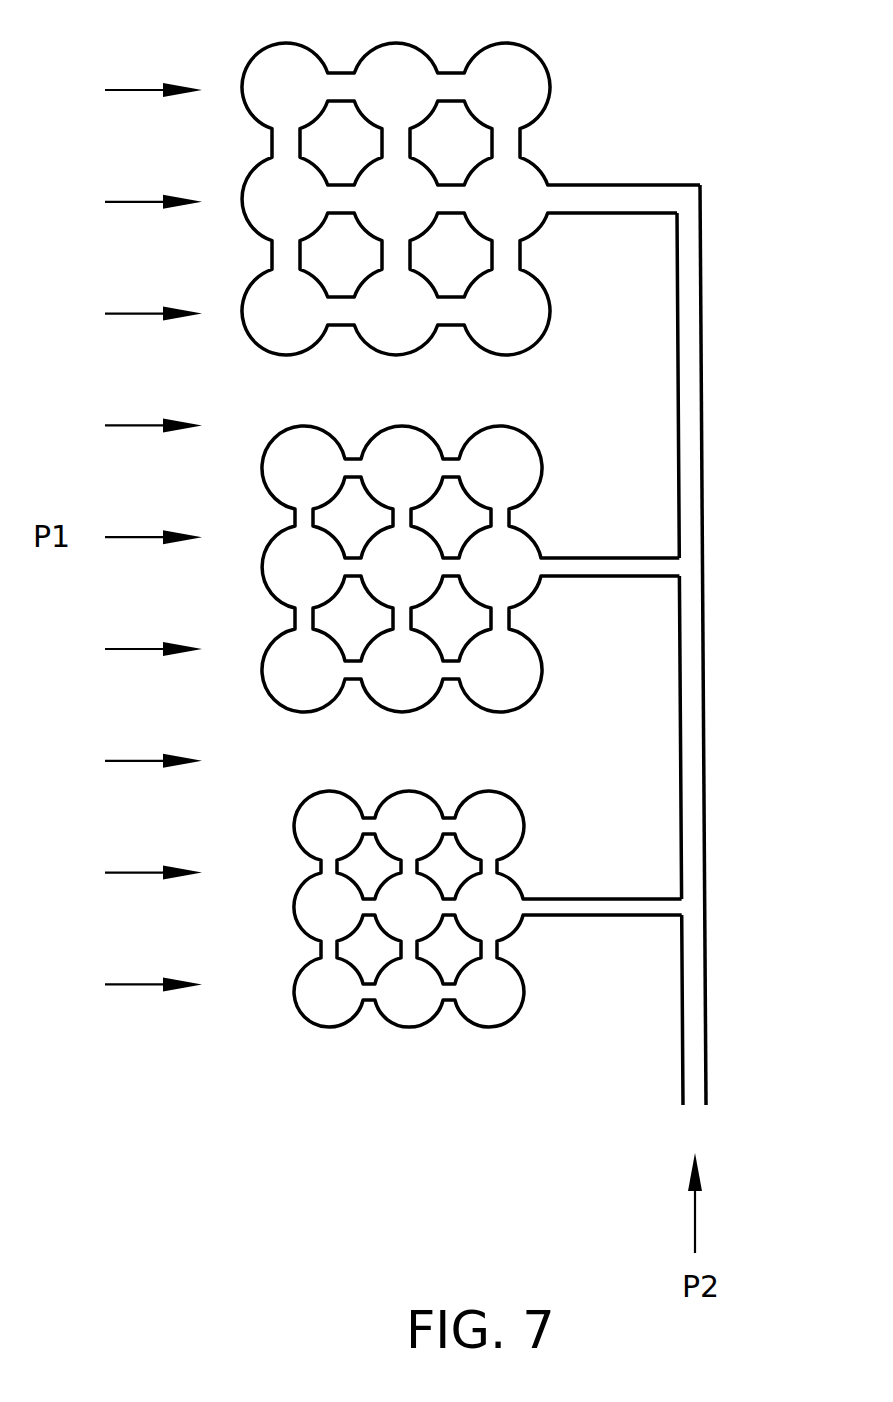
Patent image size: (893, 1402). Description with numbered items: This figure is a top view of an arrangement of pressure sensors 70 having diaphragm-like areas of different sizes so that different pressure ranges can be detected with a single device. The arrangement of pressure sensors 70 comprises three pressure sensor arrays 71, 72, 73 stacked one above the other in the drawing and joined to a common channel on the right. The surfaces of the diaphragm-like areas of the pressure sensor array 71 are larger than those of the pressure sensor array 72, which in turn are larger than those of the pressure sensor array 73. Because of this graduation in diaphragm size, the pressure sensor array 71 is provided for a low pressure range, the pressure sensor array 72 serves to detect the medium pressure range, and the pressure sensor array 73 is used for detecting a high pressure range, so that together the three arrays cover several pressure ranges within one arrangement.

The arrangement of pressure sensors 70 is at (520, 552).
The pressure sensor array 71 is at (570, 147).
The pressure sensor array 72 is at (565, 512).
The pressure sensor array 73 is at (557, 850).